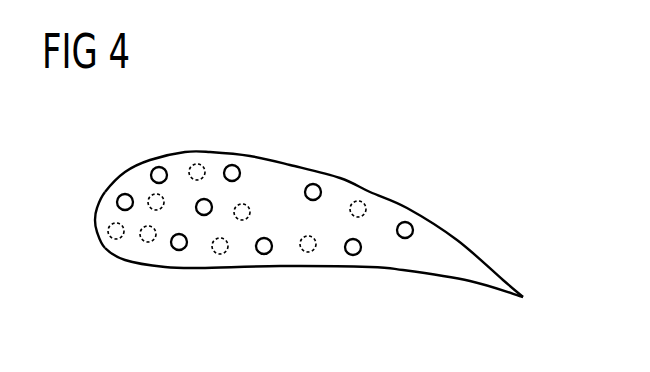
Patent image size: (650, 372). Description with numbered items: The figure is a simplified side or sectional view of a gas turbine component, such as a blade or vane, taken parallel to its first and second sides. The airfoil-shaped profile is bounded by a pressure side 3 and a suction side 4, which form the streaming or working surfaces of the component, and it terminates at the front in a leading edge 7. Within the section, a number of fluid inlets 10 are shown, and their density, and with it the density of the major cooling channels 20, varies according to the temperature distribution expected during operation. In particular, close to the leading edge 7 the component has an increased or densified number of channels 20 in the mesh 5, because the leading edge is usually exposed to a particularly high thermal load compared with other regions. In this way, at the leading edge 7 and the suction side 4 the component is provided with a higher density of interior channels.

The pressure side 3 is at (278, 162).
The suction side 4 is at (203, 267).
The mesh 5 is at (199, 164).
The leading edge 7 is at (94, 217).
The fluid inlets 10 is at (313, 183).
The cooling channels 20 is at (233, 165).